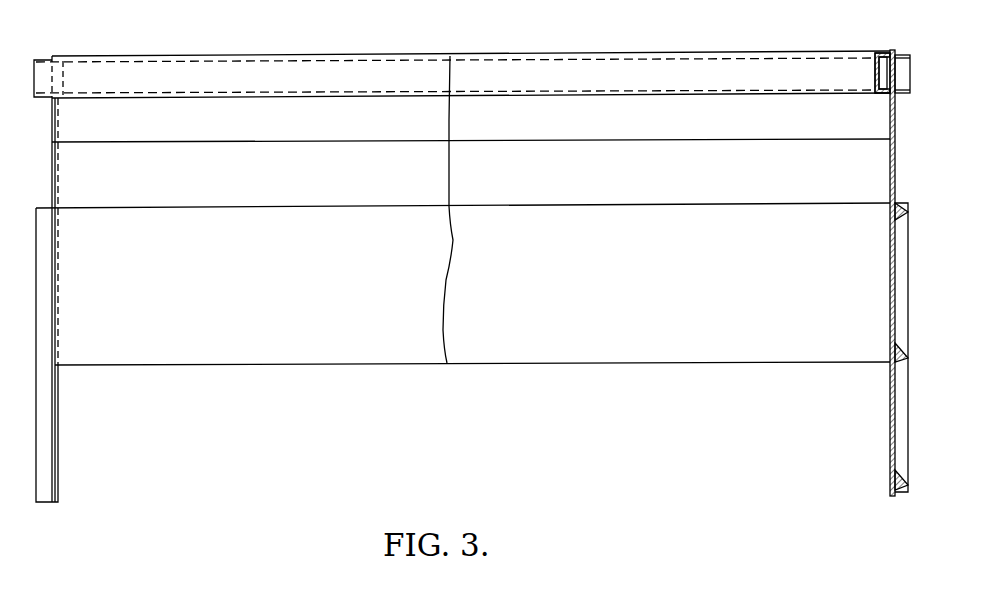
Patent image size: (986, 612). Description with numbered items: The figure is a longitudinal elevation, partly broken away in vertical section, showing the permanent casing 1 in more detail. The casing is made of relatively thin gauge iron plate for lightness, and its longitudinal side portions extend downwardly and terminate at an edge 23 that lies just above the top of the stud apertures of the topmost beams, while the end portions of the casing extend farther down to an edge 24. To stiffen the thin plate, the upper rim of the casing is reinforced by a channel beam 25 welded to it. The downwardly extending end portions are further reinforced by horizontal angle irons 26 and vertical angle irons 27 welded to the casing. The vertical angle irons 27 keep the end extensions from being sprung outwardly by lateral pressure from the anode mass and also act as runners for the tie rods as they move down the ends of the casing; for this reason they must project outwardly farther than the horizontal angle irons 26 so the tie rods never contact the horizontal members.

The permanent casing 1 is at (43, 149).
The edge 23 is at (385, 366).
The edge 24 is at (893, 496).
The channel beam 25 is at (898, 52).
The horizontal angle irons 26 is at (908, 359).
The vertical angle irons 27 is at (43, 297).